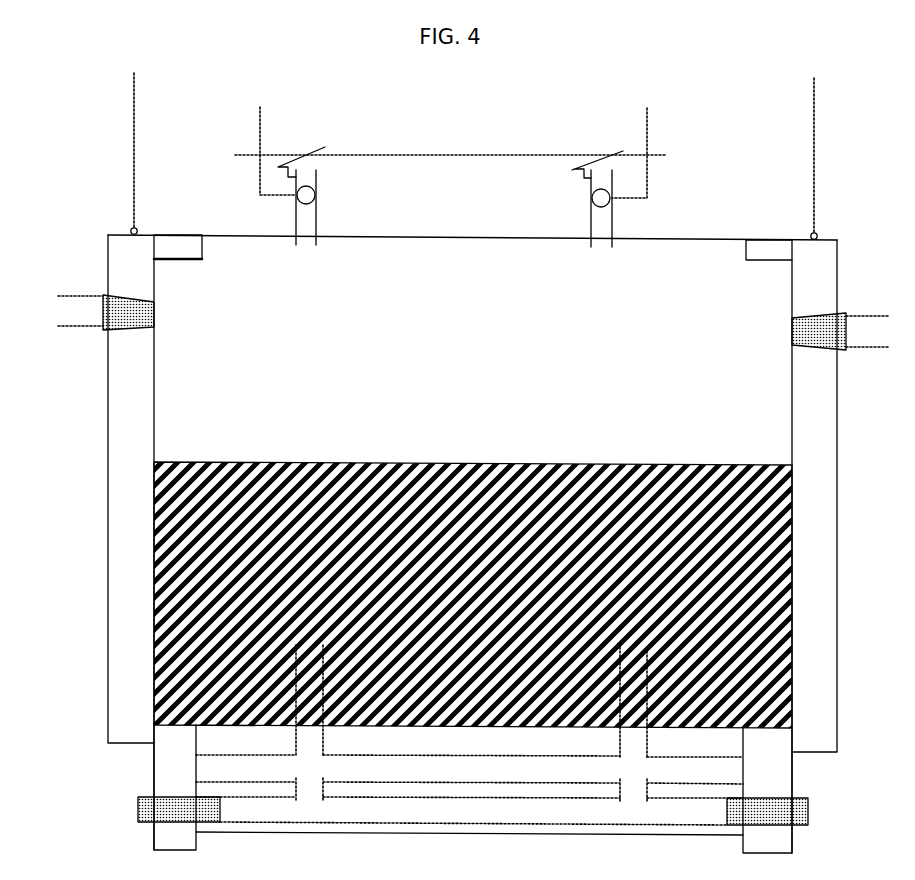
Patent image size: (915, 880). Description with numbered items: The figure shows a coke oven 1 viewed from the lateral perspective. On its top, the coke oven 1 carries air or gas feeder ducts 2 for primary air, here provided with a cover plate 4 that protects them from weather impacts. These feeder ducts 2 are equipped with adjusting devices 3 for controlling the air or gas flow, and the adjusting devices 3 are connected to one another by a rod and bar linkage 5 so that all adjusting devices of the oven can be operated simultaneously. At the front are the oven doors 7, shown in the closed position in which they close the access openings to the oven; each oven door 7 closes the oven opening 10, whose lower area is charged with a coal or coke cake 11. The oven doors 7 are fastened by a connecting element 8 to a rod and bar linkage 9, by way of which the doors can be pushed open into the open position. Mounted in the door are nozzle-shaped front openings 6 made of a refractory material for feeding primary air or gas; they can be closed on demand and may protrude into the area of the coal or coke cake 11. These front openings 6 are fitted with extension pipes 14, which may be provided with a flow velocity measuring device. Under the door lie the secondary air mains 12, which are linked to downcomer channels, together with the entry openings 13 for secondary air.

The coke oven 1 is at (410, 236).
The air or gas feeder ducts for primary air 2 is at (583, 204).
The adjusting devices for controlling the air or gas flow 3 is at (615, 189).
The cover plate 4 is at (606, 147).
The rod and bar linkage 5 is at (392, 151).
The nozzle-shaped front openings for feeding primary air or gas 6 is at (136, 291).
The oven doors 7 is at (105, 243).
The connecting element 8 is at (128, 226).
The rod and bar linkage for opening the oven door 9 is at (124, 136).
The oven opening 10 is at (170, 268).
The coal or coke cake 11 is at (450, 461).
The secondary air mains 12 is at (196, 762).
The entry openings for secondary air 13 is at (136, 810).
The extension pipes 14 is at (74, 291).